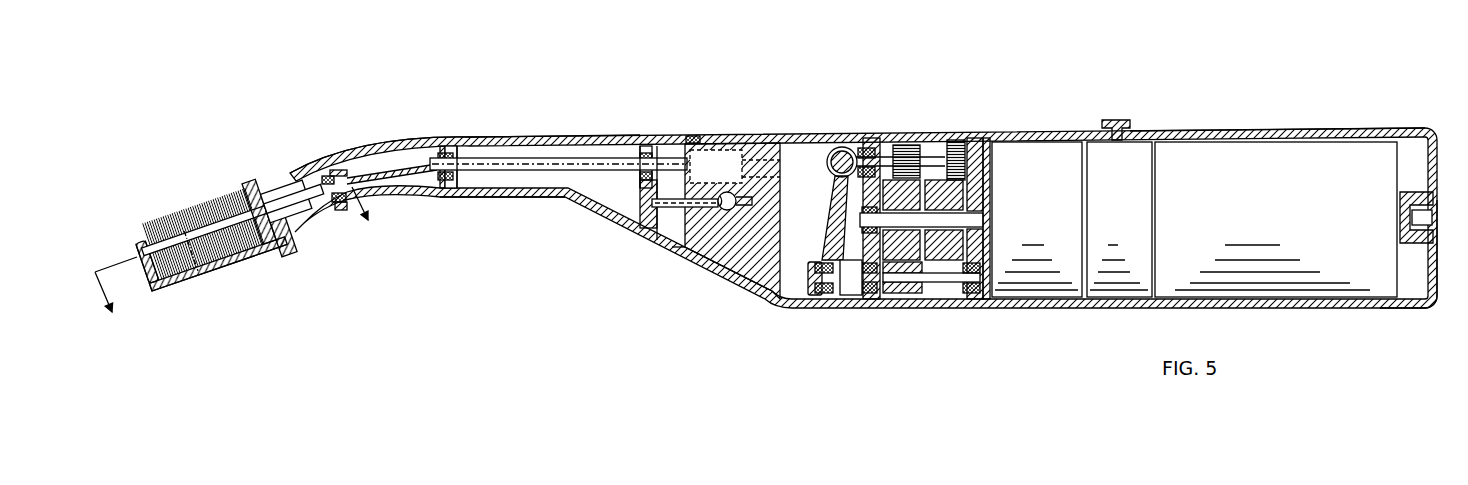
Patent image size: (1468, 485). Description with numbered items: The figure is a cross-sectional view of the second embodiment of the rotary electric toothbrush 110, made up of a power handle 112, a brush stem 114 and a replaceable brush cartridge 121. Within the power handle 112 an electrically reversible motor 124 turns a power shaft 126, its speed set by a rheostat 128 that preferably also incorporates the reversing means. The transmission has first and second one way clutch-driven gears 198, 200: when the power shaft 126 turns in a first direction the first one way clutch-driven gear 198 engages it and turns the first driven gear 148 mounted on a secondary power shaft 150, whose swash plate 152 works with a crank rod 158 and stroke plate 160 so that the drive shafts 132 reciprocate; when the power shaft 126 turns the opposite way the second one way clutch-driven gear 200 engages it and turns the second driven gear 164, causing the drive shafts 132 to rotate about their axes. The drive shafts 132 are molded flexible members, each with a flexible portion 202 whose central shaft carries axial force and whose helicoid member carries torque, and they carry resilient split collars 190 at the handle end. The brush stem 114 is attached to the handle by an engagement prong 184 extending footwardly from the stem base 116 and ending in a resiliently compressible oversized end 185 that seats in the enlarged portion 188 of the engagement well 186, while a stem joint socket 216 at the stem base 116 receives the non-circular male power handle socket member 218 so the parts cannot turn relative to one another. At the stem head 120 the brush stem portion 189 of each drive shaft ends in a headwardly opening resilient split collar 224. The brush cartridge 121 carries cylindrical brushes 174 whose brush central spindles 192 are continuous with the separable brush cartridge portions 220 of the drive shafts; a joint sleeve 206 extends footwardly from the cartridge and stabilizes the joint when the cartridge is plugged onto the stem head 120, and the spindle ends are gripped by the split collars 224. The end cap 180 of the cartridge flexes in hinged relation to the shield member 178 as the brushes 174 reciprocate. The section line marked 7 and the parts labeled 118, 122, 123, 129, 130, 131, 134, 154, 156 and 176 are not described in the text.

The section line 7- 7 is at (236, 261).
The rotary electric toothbrush 110 is at (1214, 126).
The power handle 112 is at (1300, 130).
The brush stem 114 is at (520, 138).
The stem base 116 is at (638, 142).
The lower neck wall 118 is at (510, 198).
The stem head 120 is at (370, 143).
The brush cartridge 121 is at (258, 186).
The end cap 122 is at (1440, 290).
The brush head 123 is at (143, 243).
The motor 124 is at (1018, 229).
The power shaft 126 is at (986, 247).
The rheostat 128 is at (1100, 229).
The retaining clip 129 is at (1118, 118).
The battery 130 is at (1252, 229).
The battery contact 131 is at (1433, 217).
The drive shaft 132 is at (573, 159).
The bearing 134 is at (341, 212).
The first driven gear 148 is at (901, 303).
The secondary power shaft 150 is at (948, 288).
The swash plate 152 is at (850, 294).
The support block 154 is at (848, 297).
The stop block 156 is at (815, 290).
The crank rod 158 is at (836, 150).
The stroke plate 160 is at (830, 192).
The second driven gear 164 is at (961, 146).
The cylindrical brush 174 is at (226, 190).
The head end cap 176 is at (143, 242).
The shield member 178 is at (241, 272).
The end cap 180 is at (148, 268).
The engagement prong 184 is at (662, 208).
The oversized end 185 is at (722, 212).
The engagement well 186 is at (686, 238).
The enlarged portion 188 is at (731, 214).
The brush stem portion 189 is at (560, 171).
The resilient split collar 190 is at (731, 146).
The brush central spindle 192 is at (184, 287).
The first one way clutch-driven gear 198 is at (890, 178).
The second one way clutch-driven gear 200 is at (938, 178).
The flexible portion 202 is at (432, 160).
The joint sleeve 206 is at (303, 252).
The stem joint socket 216 is at (686, 140).
The male power handle socket member 218 is at (694, 142).
The separable brush cartridge portion 220 is at (297, 193).
The resilient split collar 224 is at (312, 188).